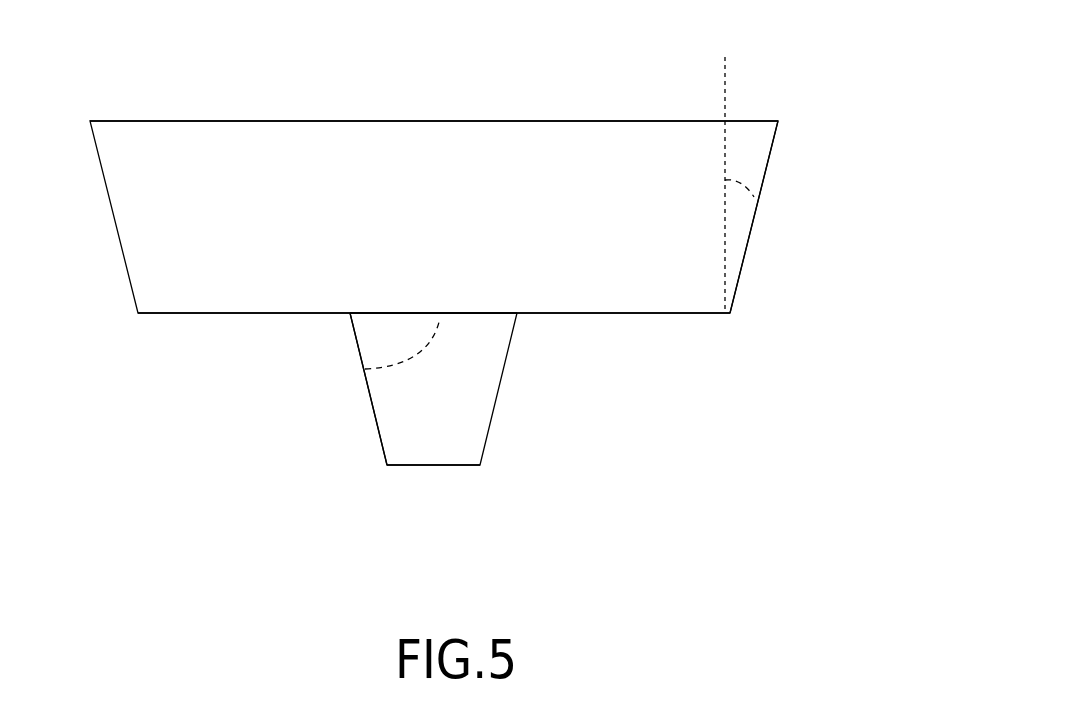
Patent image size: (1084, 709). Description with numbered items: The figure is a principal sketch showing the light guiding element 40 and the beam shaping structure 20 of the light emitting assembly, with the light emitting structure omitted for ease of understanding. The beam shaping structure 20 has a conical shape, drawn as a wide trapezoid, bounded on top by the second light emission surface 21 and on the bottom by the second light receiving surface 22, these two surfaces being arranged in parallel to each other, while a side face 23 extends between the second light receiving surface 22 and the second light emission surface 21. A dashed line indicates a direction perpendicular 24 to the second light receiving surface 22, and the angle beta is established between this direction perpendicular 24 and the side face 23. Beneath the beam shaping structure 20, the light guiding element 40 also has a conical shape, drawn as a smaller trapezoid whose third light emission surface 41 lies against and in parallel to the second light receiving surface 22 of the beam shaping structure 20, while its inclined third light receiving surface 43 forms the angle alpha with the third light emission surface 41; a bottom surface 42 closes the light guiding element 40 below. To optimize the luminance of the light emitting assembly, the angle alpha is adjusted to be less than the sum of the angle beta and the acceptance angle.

The beam shaping structure 20 is at (418, 201).
The second light emission surface 21 is at (222, 132).
The second light receiving surface 22 is at (672, 310).
The side face 23 is at (770, 152).
The direction perpendicular to the second light receiving surface 24 is at (726, 164).
The light guiding element 40 is at (453, 423).
The third light emission surface 41 is at (475, 317).
The bottom surface of projection 42 is at (433, 467).
The third light receiving surface 43 is at (377, 423).